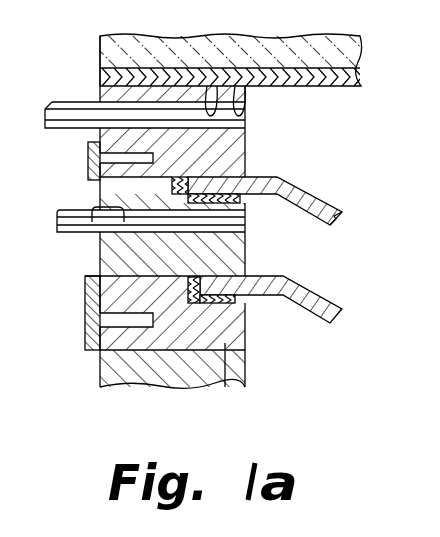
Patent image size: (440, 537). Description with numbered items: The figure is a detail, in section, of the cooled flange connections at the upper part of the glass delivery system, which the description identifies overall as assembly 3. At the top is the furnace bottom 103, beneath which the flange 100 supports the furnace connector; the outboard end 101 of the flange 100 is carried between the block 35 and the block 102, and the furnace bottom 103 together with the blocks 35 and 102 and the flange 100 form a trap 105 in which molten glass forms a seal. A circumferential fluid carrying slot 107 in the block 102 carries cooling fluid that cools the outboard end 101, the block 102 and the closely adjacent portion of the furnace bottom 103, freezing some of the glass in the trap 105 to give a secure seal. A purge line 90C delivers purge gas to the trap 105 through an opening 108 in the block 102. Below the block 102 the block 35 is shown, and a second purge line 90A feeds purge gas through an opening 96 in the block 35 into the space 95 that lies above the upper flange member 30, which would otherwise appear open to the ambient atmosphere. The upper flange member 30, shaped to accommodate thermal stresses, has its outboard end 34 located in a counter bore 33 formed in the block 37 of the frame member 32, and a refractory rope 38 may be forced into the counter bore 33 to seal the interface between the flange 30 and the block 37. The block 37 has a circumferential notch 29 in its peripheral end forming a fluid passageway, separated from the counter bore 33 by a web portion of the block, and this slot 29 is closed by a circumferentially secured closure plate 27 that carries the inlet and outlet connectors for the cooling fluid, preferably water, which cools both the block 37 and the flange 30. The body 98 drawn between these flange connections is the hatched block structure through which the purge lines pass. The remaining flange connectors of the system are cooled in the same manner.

The cutting tool insert assembly 3 is at (434, 106).
The closure plate 27 is at (85, 301).
The circumferential notch 29 is at (100, 319).
The upper flange member 30 is at (318, 293).
The frame member 32 is at (97, 373).
The counter bore 33 is at (246, 352).
The outboard end 34 is at (260, 278).
The block 35 is at (100, 245).
The block 37 is at (241, 389).
The refractory rope 38 is at (246, 298).
The secondary purge line 90A is at (72, 208).
The purge line 90C is at (247, 112).
The space 95 is at (333, 248).
The opening 96 is at (95, 215).
The upper body block 98 is at (237, 156).
The flange 100 is at (328, 206).
The outboard end 101 is at (252, 179).
The block 102 is at (97, 90).
The furnace bottom 103 is at (363, 76).
The trap 105 is at (373, 146).
The circumferential fluid carrying slot 107 is at (88, 155).
The opening 108 is at (215, 86).